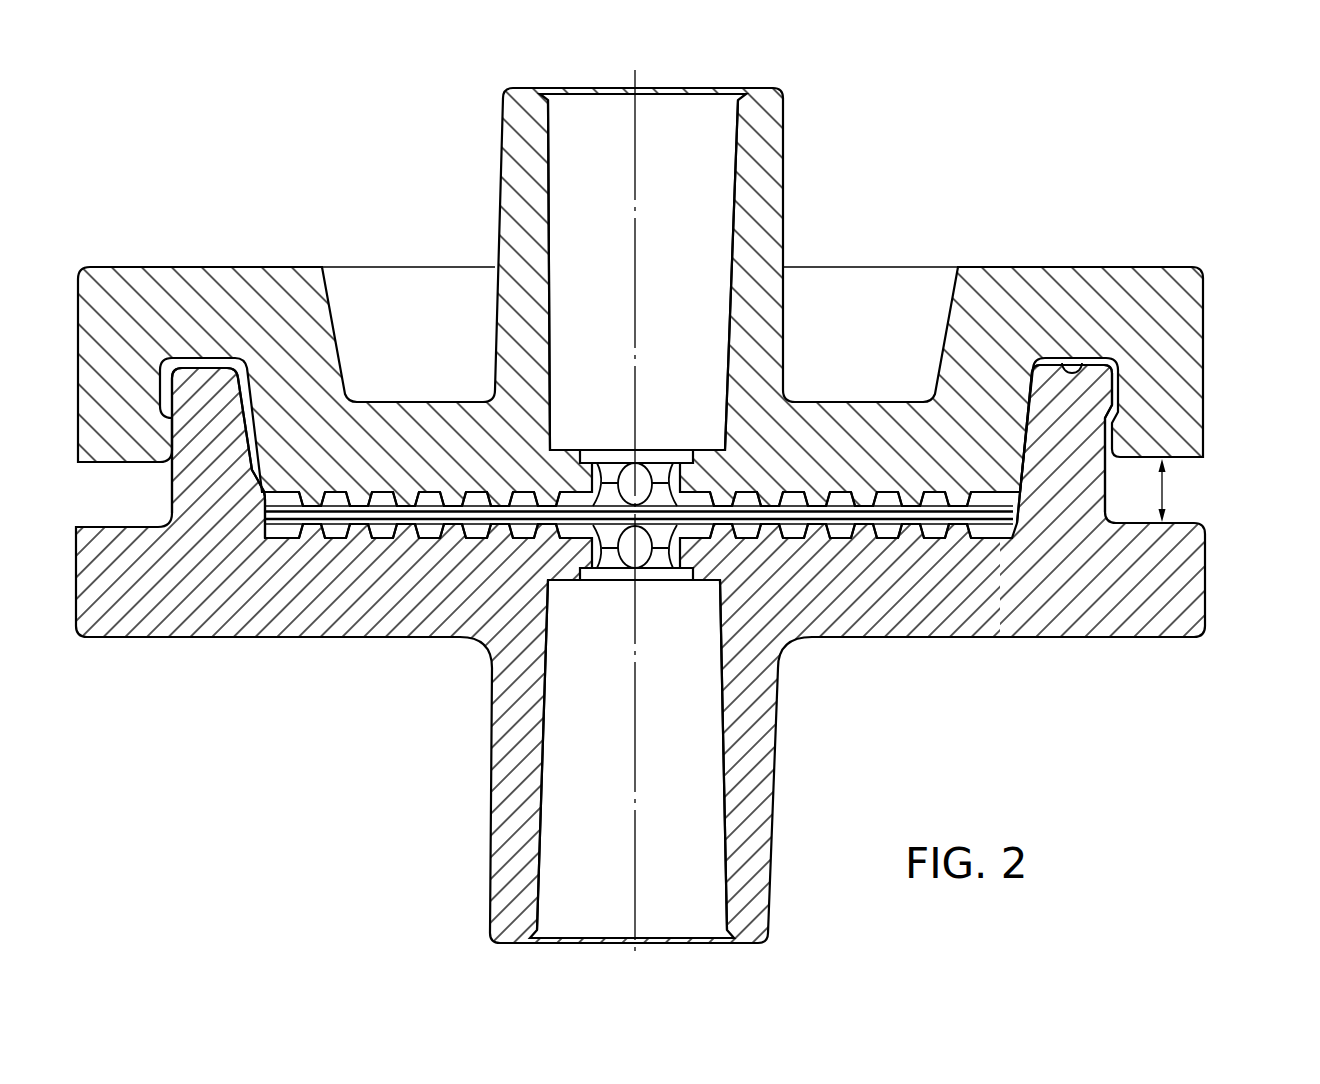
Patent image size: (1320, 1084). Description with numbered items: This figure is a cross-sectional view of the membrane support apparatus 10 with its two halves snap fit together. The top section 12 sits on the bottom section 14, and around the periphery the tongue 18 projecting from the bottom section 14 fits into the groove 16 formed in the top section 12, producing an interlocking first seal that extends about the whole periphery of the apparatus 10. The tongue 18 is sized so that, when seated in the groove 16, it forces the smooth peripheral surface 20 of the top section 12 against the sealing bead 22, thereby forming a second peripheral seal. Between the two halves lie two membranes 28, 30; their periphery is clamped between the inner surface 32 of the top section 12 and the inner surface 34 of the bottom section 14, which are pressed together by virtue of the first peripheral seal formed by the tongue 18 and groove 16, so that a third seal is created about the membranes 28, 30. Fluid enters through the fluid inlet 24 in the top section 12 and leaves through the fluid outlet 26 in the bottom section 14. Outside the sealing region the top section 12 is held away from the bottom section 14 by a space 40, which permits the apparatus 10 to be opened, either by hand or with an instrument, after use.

The membrane support apparatus 10 is at (1079, 188).
The top section 12 is at (1197, 272).
The bottom section 14 is at (1185, 638).
The groove 16 is at (1080, 363).
The tongue 18 is at (1097, 392).
The smooth peripheral surface 20 is at (247, 436).
The bead seal 22 is at (262, 476).
The fluid inlet 24 is at (707, 169).
The fluid outlet 26 is at (694, 804).
The membrane 28 is at (850, 492).
The membrane 30 is at (849, 538).
The inner surface of top section 32 is at (404, 494).
The inner surface of base section 34 is at (272, 530).
The space 40 is at (1166, 488).